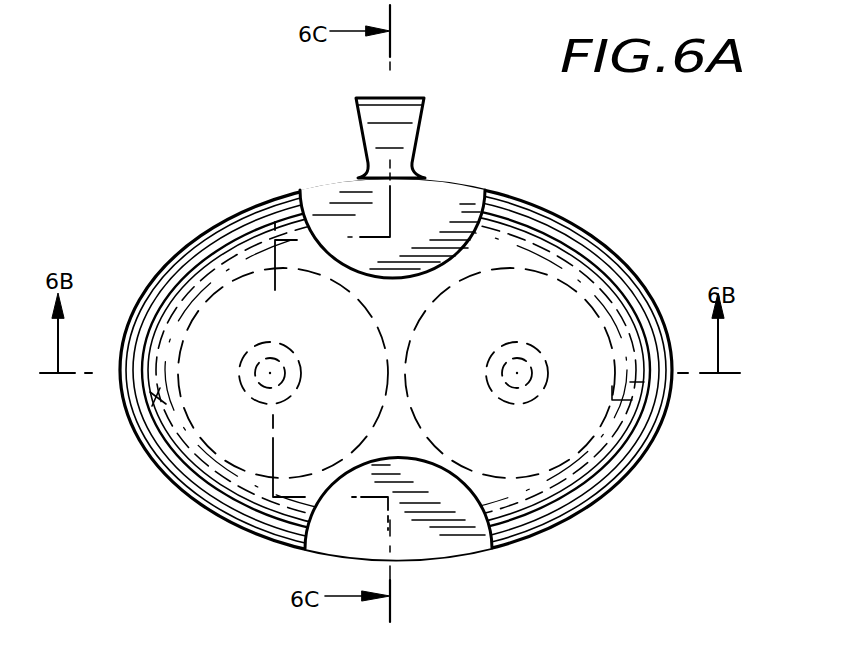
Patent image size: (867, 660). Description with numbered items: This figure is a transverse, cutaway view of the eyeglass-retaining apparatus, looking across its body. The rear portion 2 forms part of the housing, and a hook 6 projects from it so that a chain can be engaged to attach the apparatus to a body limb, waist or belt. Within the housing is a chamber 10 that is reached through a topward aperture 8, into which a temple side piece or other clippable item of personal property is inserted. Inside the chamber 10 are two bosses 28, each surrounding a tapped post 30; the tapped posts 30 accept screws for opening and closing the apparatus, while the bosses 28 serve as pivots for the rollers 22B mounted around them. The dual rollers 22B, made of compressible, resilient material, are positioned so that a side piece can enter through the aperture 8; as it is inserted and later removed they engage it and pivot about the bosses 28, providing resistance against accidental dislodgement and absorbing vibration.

The rear portion 2 is at (627, 276).
The hook 6 is at (424, 102).
The aperture 8 is at (452, 200).
The chamber 10 is at (455, 545).
The boss 28 is at (528, 340).
The tapped post 30 is at (299, 390).
The roller 22B is at (123, 423).